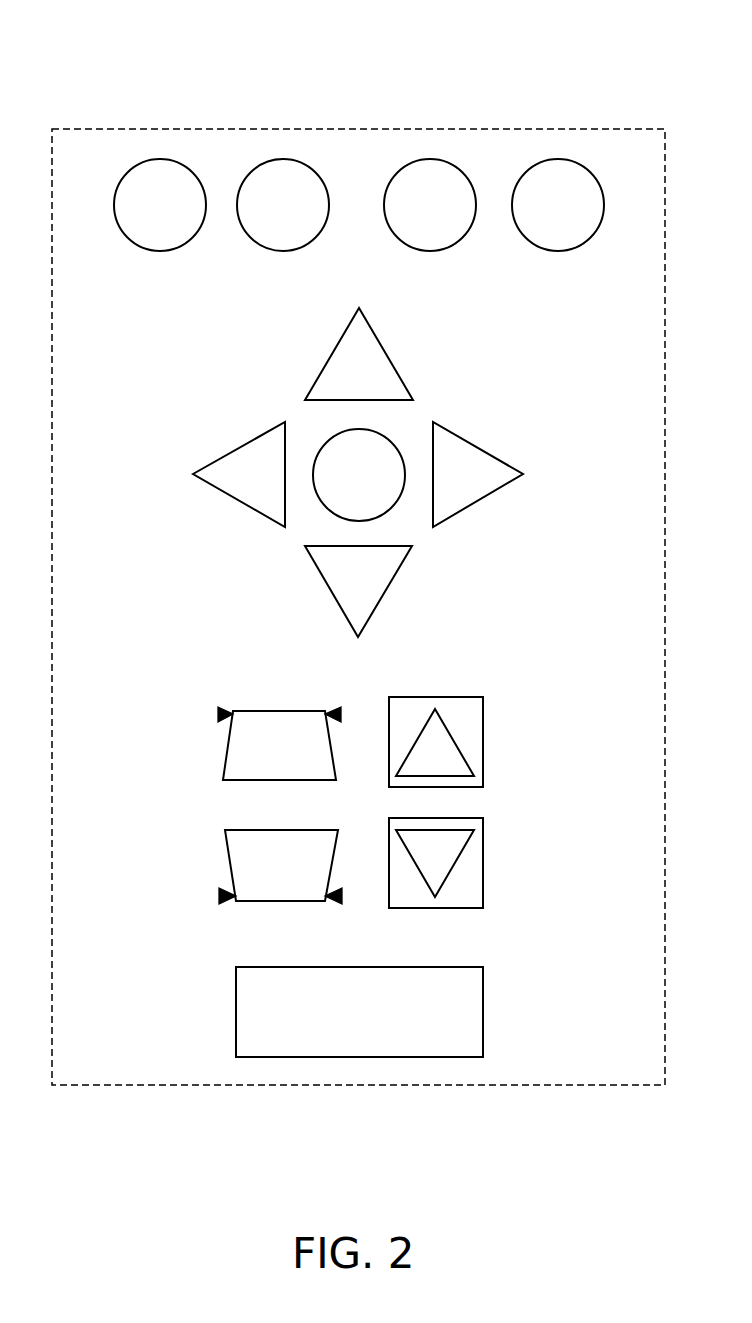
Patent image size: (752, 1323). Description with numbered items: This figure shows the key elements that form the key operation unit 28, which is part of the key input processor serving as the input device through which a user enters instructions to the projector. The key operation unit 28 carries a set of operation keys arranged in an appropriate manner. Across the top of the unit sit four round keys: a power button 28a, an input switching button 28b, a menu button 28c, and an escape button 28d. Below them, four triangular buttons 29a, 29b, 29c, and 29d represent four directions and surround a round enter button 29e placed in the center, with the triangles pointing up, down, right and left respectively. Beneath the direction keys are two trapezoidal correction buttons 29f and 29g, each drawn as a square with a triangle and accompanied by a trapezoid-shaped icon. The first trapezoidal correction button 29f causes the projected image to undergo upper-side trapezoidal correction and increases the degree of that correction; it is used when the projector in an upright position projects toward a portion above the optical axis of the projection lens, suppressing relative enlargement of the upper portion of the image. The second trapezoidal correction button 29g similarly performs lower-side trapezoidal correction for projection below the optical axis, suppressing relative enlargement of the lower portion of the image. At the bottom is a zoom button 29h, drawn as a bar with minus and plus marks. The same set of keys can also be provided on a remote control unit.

The key operation unit 28 is at (634, 128).
The power button 28a is at (160, 159).
The input switching button 28b is at (283, 159).
The menu button 28c is at (430, 159).
The escape button 28d is at (558, 159).
The triangular button 29a is at (371, 356).
The triangular button 29b is at (360, 603).
The triangular button 29c is at (497, 470).
The triangular button 29d is at (226, 471).
The enter button 29e is at (392, 445).
The first trapezoidal correction button 29f is at (470, 737).
The second trapezoidal correction button 29g is at (470, 872).
The zoom button 29h is at (470, 1017).